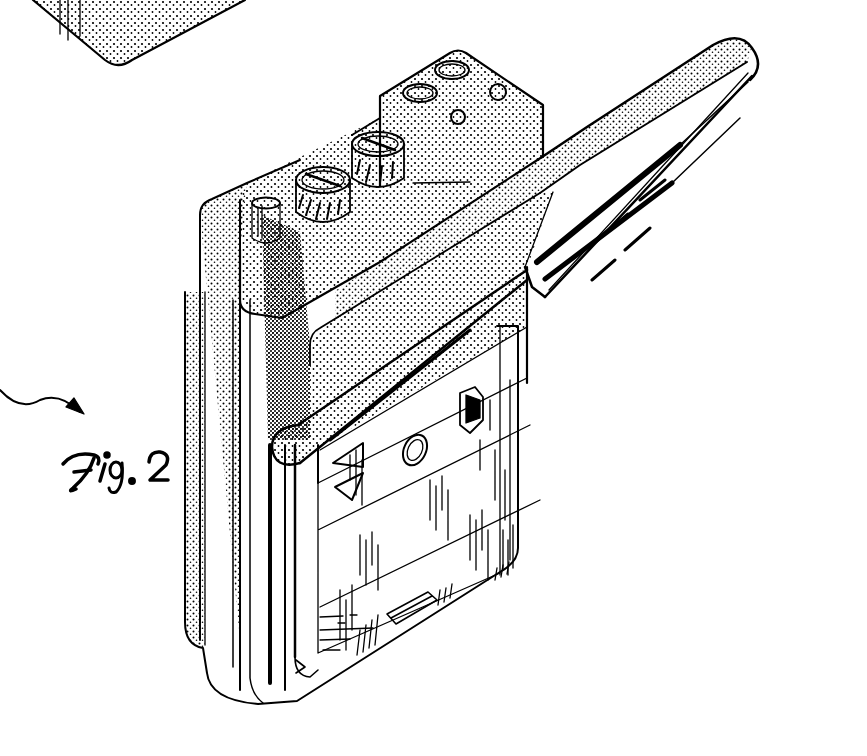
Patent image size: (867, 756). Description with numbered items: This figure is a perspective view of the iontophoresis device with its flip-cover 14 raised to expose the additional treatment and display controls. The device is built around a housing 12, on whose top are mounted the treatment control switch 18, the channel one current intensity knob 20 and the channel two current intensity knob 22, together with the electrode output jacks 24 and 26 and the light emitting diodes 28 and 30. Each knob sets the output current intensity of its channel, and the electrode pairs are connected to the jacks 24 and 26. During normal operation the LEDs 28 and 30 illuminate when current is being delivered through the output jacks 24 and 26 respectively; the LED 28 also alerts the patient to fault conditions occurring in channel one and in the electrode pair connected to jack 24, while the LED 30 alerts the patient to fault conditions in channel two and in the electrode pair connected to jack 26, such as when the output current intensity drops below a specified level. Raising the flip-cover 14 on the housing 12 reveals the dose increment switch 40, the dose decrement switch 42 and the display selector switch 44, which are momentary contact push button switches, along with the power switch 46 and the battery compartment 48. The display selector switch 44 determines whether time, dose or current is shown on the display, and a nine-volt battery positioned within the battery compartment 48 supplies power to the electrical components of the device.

The housing 12 is at (197, 377).
The flip-cover 14 is at (630, 178).
The treatment control switch 18 is at (250, 200).
The channel 1 current intensity knob 20 is at (303, 173).
The channel 2 current intensity knob 22 is at (365, 137).
The electrode output jack 24 is at (411, 80).
The electrode output jack 26 is at (452, 60).
The light emitting diode 28 is at (462, 110).
The light emitting diode 30 is at (504, 86).
The dose increment switch 40 is at (335, 468).
The dose decrement switch 42 is at (333, 493).
The display selector switch 44 is at (430, 445).
The power switch 46 is at (482, 397).
The battery compartment 48 is at (437, 522).